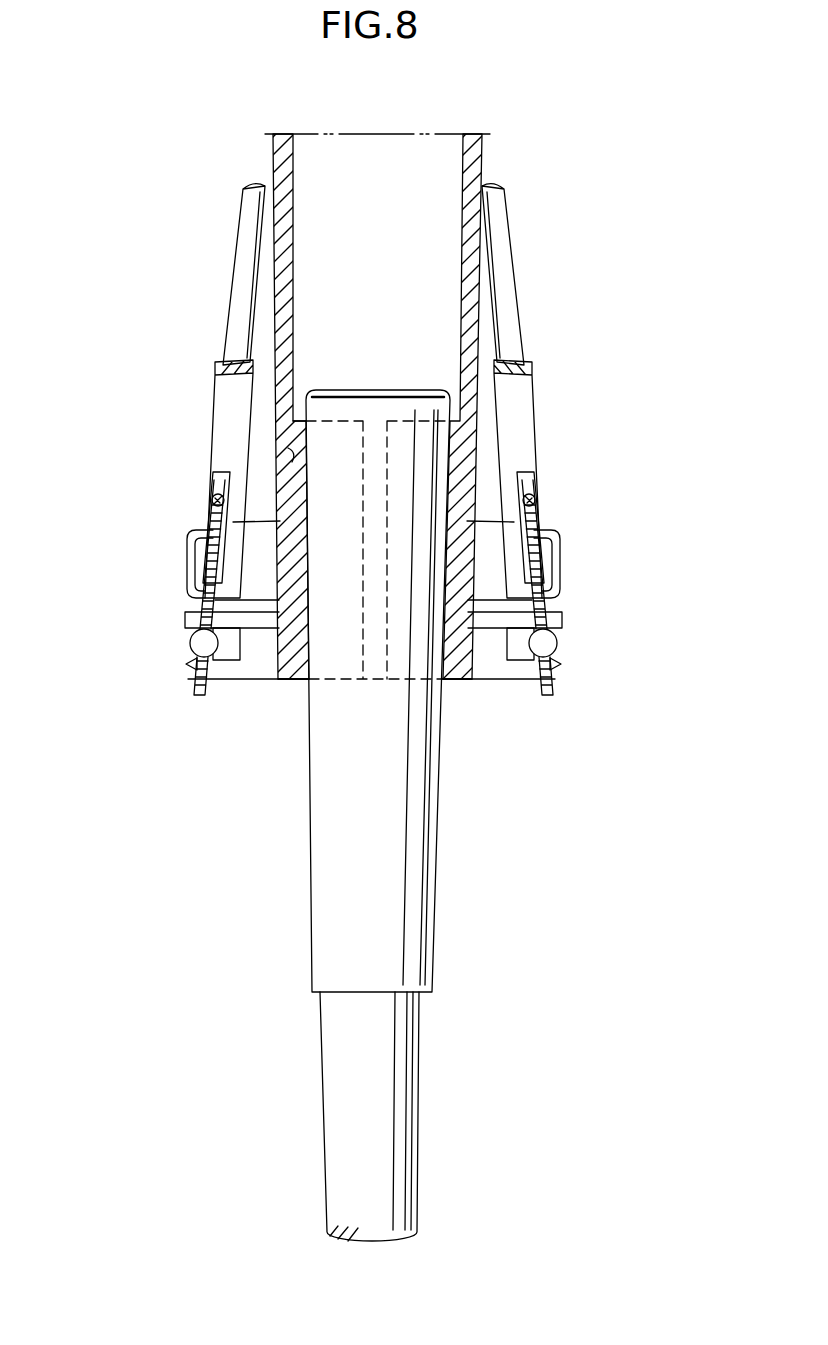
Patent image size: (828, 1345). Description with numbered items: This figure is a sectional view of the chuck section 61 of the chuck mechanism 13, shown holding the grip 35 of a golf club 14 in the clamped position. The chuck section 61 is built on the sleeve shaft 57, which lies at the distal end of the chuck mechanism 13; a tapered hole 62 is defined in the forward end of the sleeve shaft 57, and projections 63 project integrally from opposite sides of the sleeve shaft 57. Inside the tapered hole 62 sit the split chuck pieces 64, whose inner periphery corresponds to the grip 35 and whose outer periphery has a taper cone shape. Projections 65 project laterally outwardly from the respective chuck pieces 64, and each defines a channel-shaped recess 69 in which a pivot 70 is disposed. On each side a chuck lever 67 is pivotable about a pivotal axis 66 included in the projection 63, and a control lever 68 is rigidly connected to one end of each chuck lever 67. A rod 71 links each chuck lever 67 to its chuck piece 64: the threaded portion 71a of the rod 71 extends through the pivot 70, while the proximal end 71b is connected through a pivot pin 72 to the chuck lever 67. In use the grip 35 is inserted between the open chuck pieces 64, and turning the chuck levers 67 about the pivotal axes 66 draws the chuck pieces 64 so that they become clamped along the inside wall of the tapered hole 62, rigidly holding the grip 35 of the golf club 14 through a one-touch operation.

The chuck mechanism 13 is at (513, 154).
The golf club 14 is at (448, 1125).
The grip 35 is at (433, 947).
The sleeve shaft 57 is at (272, 152).
The chuck section 61 is at (641, 623).
The tapered hole 62 is at (290, 448).
The projections 63 is at (187, 556).
The split chuck pieces 64 is at (297, 680).
The projections 65 is at (226, 680).
The pivotal axis 66 is at (187, 584).
The chuck levers 67 is at (214, 390).
The control levers 68 is at (228, 288).
The channel-shaped recess 69 is at (235, 655).
The pivots 70 is at (190, 645).
The rods 71 is at (200, 696).
The threaded portion 71a is at (185, 678).
The proximal end 71b is at (213, 478).
The pivot pin 72 is at (212, 500).